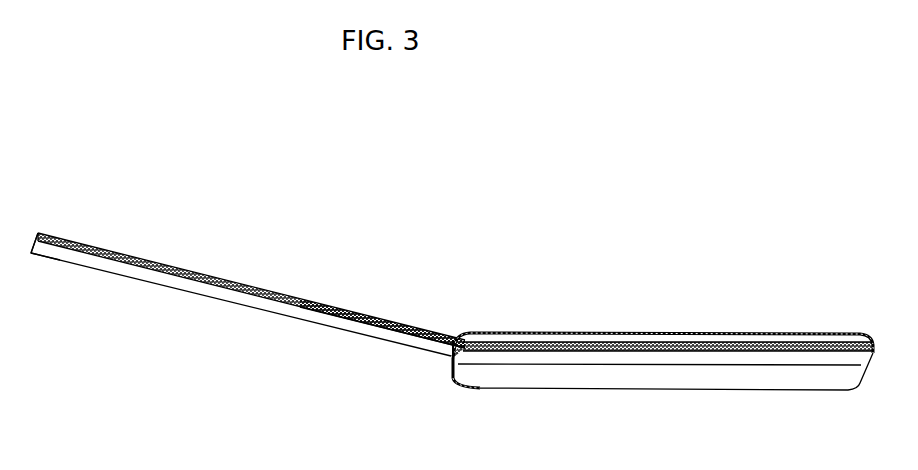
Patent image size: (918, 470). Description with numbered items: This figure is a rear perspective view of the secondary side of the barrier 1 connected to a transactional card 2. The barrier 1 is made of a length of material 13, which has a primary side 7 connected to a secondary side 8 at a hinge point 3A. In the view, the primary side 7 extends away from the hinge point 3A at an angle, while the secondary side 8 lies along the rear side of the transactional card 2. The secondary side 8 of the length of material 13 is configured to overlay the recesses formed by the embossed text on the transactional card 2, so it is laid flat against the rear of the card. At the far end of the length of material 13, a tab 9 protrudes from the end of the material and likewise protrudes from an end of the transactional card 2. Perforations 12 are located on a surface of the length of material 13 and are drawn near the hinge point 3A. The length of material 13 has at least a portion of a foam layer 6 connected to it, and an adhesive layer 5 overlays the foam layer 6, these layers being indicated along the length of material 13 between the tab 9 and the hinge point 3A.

The barrier 1 is at (258, 289).
The transactional card 2 is at (505, 333).
The hinge point 3A is at (460, 356).
The adhesive layer 5 is at (348, 311).
The foam layer 6 is at (363, 318).
The primary side 7 is at (292, 313).
The secondary side 8 is at (607, 357).
The tab 9 is at (38, 242).
The perforations 12 is at (460, 352).
The length of material 13 is at (175, 272).